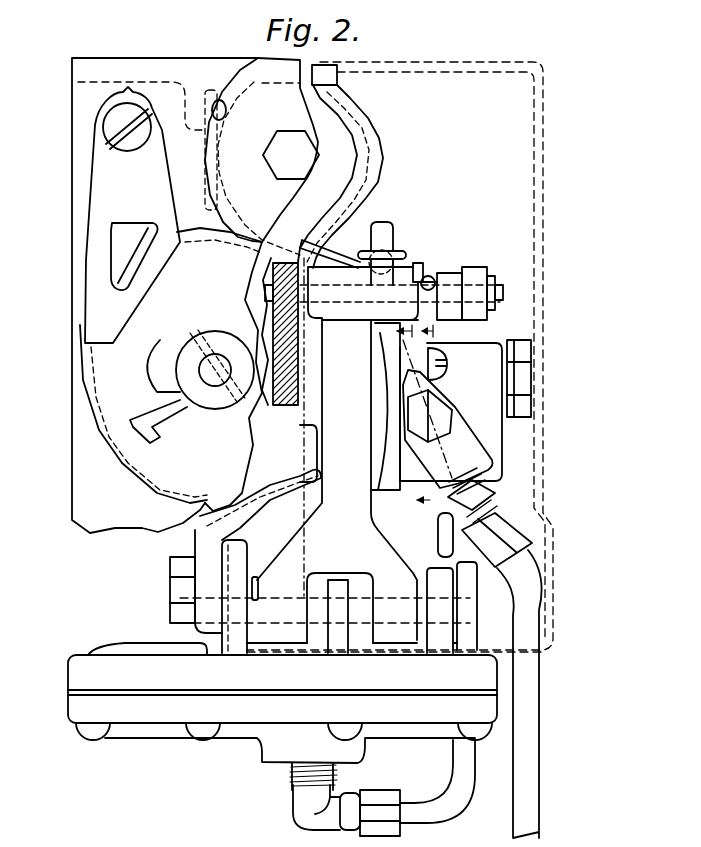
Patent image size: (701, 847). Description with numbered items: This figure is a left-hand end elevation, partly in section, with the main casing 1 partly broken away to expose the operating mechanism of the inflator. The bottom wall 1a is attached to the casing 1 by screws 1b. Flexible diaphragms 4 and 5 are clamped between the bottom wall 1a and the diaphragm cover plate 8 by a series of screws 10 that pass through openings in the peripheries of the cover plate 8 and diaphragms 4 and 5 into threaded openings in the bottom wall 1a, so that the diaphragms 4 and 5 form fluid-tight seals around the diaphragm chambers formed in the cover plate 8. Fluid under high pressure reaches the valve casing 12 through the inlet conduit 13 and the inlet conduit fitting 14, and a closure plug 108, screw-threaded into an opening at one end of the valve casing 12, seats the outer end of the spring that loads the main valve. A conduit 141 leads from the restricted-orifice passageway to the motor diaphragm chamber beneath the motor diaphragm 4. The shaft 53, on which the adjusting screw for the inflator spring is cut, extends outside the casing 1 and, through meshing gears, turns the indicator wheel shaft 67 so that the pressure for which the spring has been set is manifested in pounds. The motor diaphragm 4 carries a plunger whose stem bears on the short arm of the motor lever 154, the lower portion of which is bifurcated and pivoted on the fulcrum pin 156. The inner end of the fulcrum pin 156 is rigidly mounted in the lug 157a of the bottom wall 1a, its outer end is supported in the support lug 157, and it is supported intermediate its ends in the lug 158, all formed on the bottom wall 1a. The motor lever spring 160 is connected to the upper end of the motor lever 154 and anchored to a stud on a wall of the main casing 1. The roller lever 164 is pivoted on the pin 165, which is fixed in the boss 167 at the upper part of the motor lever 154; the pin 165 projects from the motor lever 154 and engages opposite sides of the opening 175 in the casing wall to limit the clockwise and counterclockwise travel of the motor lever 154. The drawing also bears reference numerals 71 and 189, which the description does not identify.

The main casing 1 is at (72, 437).
The bottom wall 1a is at (77, 665).
The screws 1b is at (180, 590).
The flexible diaphragm 4 is at (53, 690).
The flexible diaphragm 5 is at (446, 484).
The diaphragm cover plate 8 is at (143, 715).
The screws 10 is at (90, 732).
The valve casing 12 is at (502, 428).
The inlet conduit 13 is at (530, 722).
The inlet conduit fitting 14 is at (500, 490).
The shaft 53 is at (294, 163).
The indicator wheel shaft 67 is at (217, 384).
The strap 71 is at (268, 542).
The closure plug 108 is at (442, 407).
The conduit 141 is at (470, 618).
The motor lever 154 is at (352, 480).
The fulcrum pin 156 is at (357, 600).
The support lug 157 is at (437, 575).
The lug 157a is at (235, 552).
The lug 158 is at (338, 588).
The motor lever spring 160 is at (398, 255).
The roller lever 164 is at (478, 268).
The pin 165 is at (415, 283).
The boss 167 is at (376, 323).
The opening 175 is at (287, 318).
The ball 189 is at (433, 278).